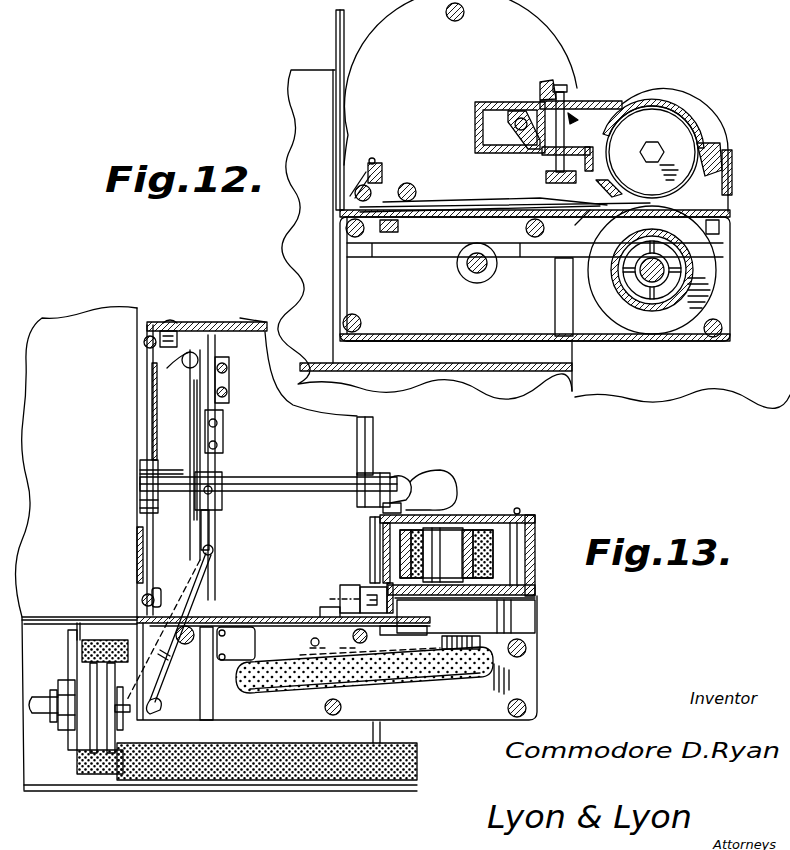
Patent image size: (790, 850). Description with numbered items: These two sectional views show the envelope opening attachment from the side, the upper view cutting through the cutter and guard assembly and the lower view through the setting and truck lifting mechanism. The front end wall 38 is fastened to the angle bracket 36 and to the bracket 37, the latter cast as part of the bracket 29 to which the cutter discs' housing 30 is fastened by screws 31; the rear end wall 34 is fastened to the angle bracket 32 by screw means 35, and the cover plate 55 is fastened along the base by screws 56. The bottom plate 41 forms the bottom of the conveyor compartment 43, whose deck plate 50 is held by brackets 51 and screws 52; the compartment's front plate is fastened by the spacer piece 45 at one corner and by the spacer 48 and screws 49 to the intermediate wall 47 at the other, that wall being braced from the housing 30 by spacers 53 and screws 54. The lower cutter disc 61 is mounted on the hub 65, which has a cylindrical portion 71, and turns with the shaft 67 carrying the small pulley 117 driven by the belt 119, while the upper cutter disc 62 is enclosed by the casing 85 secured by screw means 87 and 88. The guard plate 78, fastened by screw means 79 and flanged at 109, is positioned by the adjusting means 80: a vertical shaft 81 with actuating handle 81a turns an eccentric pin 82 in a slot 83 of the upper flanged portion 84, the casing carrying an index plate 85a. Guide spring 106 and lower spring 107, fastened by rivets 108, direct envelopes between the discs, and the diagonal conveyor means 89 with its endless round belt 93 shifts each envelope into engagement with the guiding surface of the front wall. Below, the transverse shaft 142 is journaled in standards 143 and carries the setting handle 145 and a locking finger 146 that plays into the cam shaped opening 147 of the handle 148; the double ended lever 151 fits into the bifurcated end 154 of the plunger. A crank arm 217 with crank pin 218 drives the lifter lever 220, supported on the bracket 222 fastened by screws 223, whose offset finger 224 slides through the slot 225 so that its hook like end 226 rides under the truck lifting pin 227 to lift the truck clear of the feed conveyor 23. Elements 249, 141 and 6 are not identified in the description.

In FIG. 12, the setting handle 145 is at (345, 20).
In FIG. 13, the setting handle 145 is at (137, 549).
In FIG. 12, the front end wall 38 is at (530, 12).
In FIG. 13, the front end wall 38 is at (274, 622).
In FIG. 12, the assembly 249 is at (620, 7).
In FIG. 12, the casing 85 is at (666, 96).
In FIG. 12, the screw means 87 is at (733, 154).
In FIG. 12, the adjusting means 80 is at (602, 100).
In FIG. 12, the upper cutter disc wheel 62 is at (681, 133).
In FIG. 12, the flange 109 is at (648, 161).
In FIG. 13, the flange 109 is at (412, 626).
In FIG. 12, the screw means 88 is at (510, 110).
In FIG. 12, the actuating handle 81a is at (552, 86).
In FIG. 12, the index plate 85a is at (574, 115).
In FIG. 12, the vertical shaft 81 is at (565, 140).
In FIG. 13, the vertical shaft 81 is at (313, 648).
In FIG. 12, the eccentric pin 82 is at (545, 157).
In FIG. 12, the slot 83 is at (555, 186).
In FIG. 12, the upper flanged portion 84 is at (602, 183).
In FIG. 12, the guide spring 106 is at (488, 200).
In FIG. 13, the guide spring 106 is at (213, 668).
In FIG. 12, the rivets 108 is at (537, 200).
In FIG. 13, the rivets 108 is at (223, 635).
In FIG. 12, the slot 225 is at (373, 160).
In FIG. 13, the slot 225 is at (168, 647).
In FIG. 12, the hook like end 226 is at (349, 178).
In FIG. 13, the hook like end 226 is at (160, 700).
In FIG. 12, the screw means 79 is at (409, 184).
In FIG. 12, the screws 52 is at (741, 195).
In FIG. 13, the screws 52 is at (527, 648).
In FIG. 12, the guard plate 78 is at (455, 164).
In FIG. 13, the guard plate 78 is at (286, 617).
In FIG. 12, the deck plate 50 is at (487, 222).
In FIG. 13, the deck plate 50 is at (527, 676).
In FIG. 12, the brackets 51 is at (397, 229).
In FIG. 12, the lower spring 107 is at (587, 211).
In FIG. 13, the lower spring 107 is at (312, 634).
In FIG. 12, the lower cutter disc wheel 61 is at (700, 286).
In FIG. 13, the lower cutter disc wheel 61 is at (477, 633).
In FIG. 12, the shaft 67 is at (658, 280).
In FIG. 12, the hub 65 is at (622, 290).
In FIG. 12, the spacer 48 is at (723, 331).
In FIG. 13, the spacer 48 is at (520, 556).
In FIG. 12, the spacer piece 45 is at (352, 335).
In FIG. 12, the bottom plate 41 is at (454, 340).
In FIG. 12, the conveyor compartment 43 is at (512, 330).
In FIG. 13, the rear end wall 34 is at (241, 326).
In FIG. 13, the screw means 35 is at (168, 322).
In FIG. 13, the angle bracket 32 is at (178, 336).
In FIG. 13, the screws 56 is at (143, 342).
In FIG. 13, the cover plate 55 is at (147, 423).
In FIG. 13, the bifurcated end 154 is at (182, 366).
In FIG. 13, the double ended lever 151 is at (189, 403).
In FIG. 13, the screws 223 is at (228, 371).
In FIG. 13, the bracket 222 is at (228, 392).
In FIG. 13, the standards 143 is at (165, 468).
In FIG. 13, the body 141 is at (260, 437).
In FIG. 13, the transverse shaft 142 is at (310, 466).
In FIG. 13, the locking finger 146 is at (392, 474).
In FIG. 13, the cam shaped opening 147 is at (412, 480).
In FIG. 13, the handle 148 is at (445, 487).
In FIG. 13, the screws 54 is at (401, 508).
In FIG. 13, the intermediate wall 47 is at (523, 515).
In FIG. 13, the screws 49 is at (528, 514).
In FIG. 13, the belt 119 is at (535, 532).
In FIG. 13, the small pulley 117 is at (458, 531).
In FIG. 13, the spacers 53 is at (370, 541).
In FIG. 13, the bracket 29 is at (352, 587).
In FIG. 13, the screws 31 is at (338, 597).
In FIG. 13, the bracket 37 is at (326, 608).
In FIG. 13, the cutter discs' housing 30 is at (523, 596).
In FIG. 13, the cylindrical portion 71 is at (512, 618).
In FIG. 13, the endless round belt 93 is at (443, 672).
In FIG. 13, the diagonal conveyor means 89 is at (393, 684).
In FIG. 13, the crank arm 217 is at (222, 512).
In FIG. 13, the crank pin 218 is at (201, 526).
In FIG. 13, the lifter lever 220 is at (214, 538).
In FIG. 13, the offset finger 224 is at (203, 585).
In FIG. 13, the angle bracket 36 is at (160, 610).
In FIG. 13, the truck lifting pin 227 is at (128, 715).
In FIG. 13, the feed conveyor 23 is at (143, 791).
In FIG. 13, the pin 6 is at (222, 655).